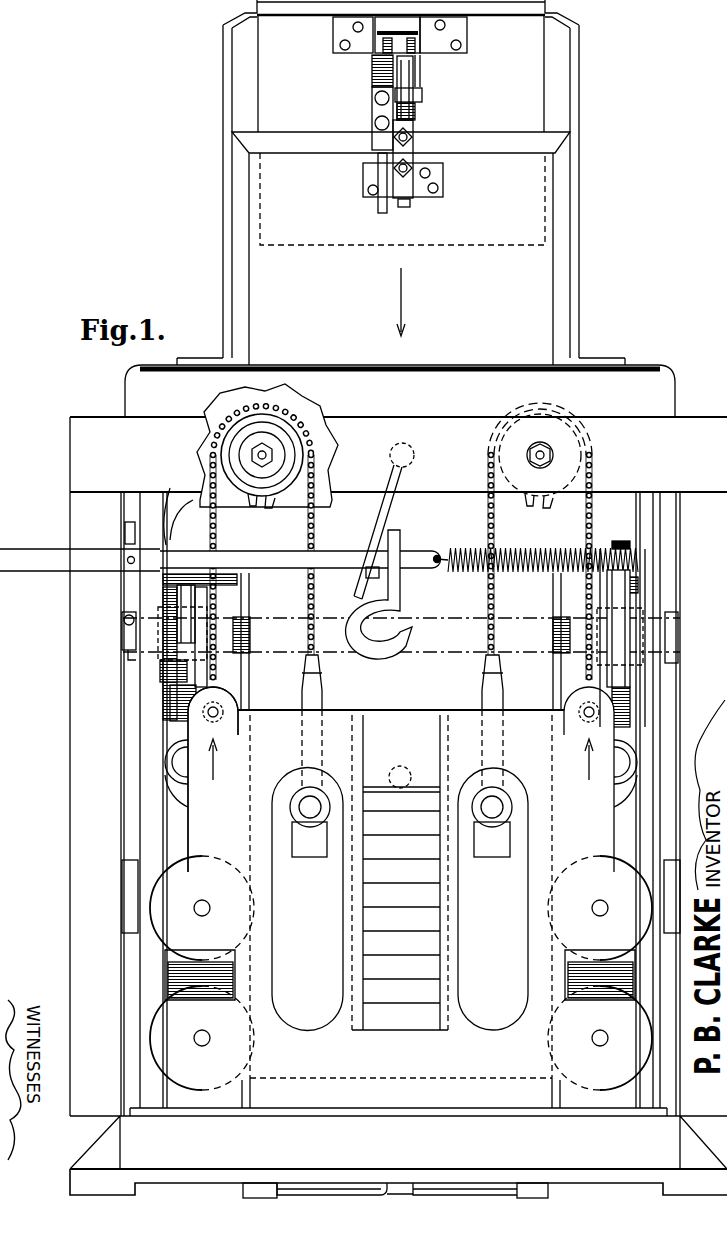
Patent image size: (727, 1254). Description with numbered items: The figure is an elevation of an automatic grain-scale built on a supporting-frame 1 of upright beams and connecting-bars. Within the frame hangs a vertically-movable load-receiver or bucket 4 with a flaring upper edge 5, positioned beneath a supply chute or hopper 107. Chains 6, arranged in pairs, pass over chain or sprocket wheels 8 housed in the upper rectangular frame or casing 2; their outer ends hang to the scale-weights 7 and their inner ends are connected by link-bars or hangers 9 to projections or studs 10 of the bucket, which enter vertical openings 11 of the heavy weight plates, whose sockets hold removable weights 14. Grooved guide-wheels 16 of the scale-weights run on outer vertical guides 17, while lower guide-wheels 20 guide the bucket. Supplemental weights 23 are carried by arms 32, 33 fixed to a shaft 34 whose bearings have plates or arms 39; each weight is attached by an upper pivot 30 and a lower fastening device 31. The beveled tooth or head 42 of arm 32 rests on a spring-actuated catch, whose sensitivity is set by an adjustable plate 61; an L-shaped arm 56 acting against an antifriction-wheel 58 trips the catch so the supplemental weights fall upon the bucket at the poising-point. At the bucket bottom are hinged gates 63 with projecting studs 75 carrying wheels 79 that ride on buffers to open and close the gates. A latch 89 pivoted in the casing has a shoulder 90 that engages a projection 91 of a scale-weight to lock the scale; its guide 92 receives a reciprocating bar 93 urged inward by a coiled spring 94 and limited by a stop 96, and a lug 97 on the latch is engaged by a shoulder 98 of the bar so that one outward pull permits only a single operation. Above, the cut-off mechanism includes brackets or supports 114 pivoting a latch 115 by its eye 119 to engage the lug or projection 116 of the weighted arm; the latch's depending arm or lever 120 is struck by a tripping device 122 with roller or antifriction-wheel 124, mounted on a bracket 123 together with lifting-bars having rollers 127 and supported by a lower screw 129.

The supporting-frame 1 is at (84, 639).
The rectangular frame or casing 2 is at (135, 403).
The load-receiver or bucket 4 is at (378, 302).
The flaring upper edge or portion 5 is at (298, 146).
The chains 6 is at (495, 622).
The scale-weights 7 is at (342, 712).
The chain or sprocket wheels 8 is at (526, 507).
The link-bars or hangers 9 is at (484, 691).
The projections or studs 10 is at (492, 818).
The vertical openings 11 is at (462, 940).
The removable weights 14 is at (410, 1030).
The grooved guide-wheels 16 is at (596, 1120).
The outer vertical guides 17 is at (645, 830).
The lower guide-wheels 20 is at (622, 792).
The supplemental weights 23 is at (578, 672).
The upper pivot 30 is at (630, 580).
The lower fastening device 31 is at (635, 690).
The arm 32 is at (190, 604).
The arm 33 is at (620, 541).
The shaft 34 is at (560, 625).
The plates or arms 39 is at (690, 662).
The beveled tooth or head 42 is at (128, 533).
The L-shaped arm 56 is at (165, 578).
The antifriction-wheel 58 is at (140, 661).
The adjustable plate 61 is at (172, 482).
The hinged gates 63 is at (348, 1186).
The projecting studs 75 is at (570, 992).
The wheels 79 is at (612, 1000).
The latch 89 is at (408, 520).
The shoulder 90 is at (412, 624).
The projection 91 is at (400, 765).
The guide 92 is at (356, 582).
The reciprocating bar 93 is at (80, 573).
The coiled spring 94 is at (520, 574).
The stop 96 is at (127, 560).
The lug 97 is at (375, 580).
The shoulder 98 is at (402, 570).
The supply chute or hopper 107 is at (372, 70).
The brackets or supports 114 is at (457, 33).
The latch 115 is at (420, 75).
The lug or projection 116 is at (422, 96).
The eye 119 is at (415, 45).
The arm or lever 120 is at (383, 213).
The tripping device 122 is at (410, 148).
The bracket 123 is at (445, 180).
The roller or antifriction-wheel 124 is at (370, 80).
The rollers 127 is at (415, 118).
The lower screw 129 is at (406, 207).